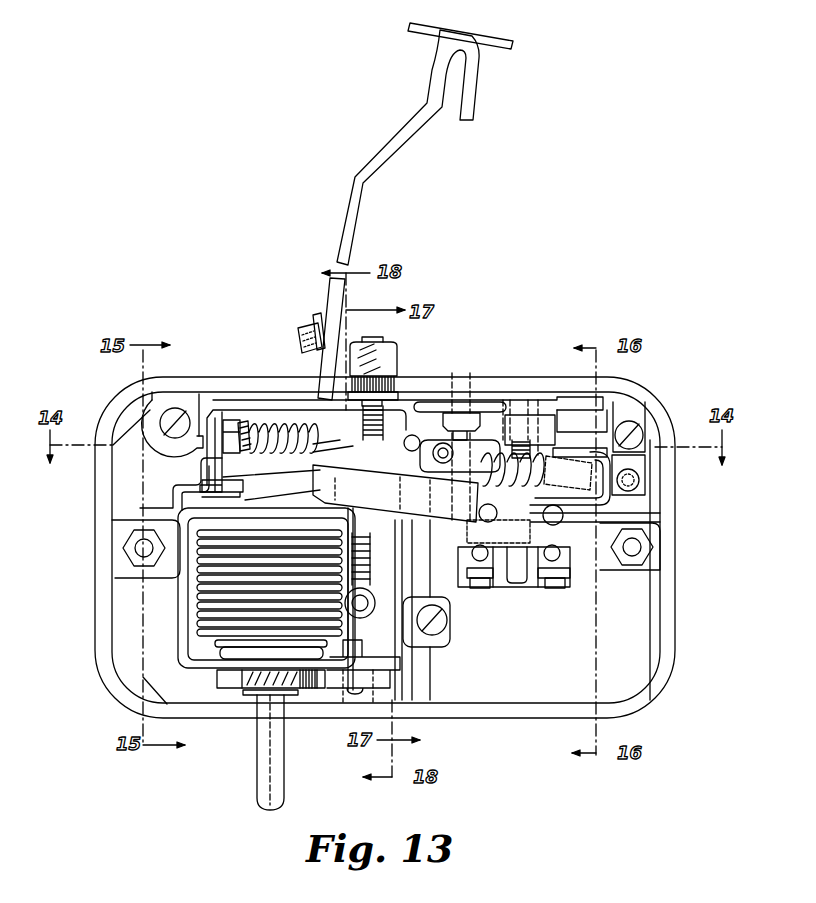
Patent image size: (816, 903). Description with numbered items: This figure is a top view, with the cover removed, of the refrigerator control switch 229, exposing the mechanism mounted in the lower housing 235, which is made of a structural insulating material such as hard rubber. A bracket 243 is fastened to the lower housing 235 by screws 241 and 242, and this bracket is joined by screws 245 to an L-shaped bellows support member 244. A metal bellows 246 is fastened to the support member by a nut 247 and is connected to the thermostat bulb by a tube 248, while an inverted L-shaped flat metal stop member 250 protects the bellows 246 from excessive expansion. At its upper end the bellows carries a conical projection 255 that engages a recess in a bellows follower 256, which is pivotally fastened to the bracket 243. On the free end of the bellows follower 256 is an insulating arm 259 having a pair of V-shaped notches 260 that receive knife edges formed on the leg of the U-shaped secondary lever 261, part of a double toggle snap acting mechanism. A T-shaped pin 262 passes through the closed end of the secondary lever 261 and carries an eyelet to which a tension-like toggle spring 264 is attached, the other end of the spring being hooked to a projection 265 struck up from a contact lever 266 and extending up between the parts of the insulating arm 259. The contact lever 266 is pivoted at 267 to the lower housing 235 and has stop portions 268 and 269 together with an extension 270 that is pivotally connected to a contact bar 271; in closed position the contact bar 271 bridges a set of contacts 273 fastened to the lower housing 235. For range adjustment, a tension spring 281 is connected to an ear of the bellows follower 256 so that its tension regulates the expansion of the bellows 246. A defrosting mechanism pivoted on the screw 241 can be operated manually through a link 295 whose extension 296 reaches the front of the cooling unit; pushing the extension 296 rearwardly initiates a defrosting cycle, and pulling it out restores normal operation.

The control switch 229 is at (736, 650).
The lower housing 235 is at (676, 604).
The screw 241 is at (173, 414).
The screw 242 is at (437, 361).
The bracket 243 is at (313, 410).
The L-shaped bellows support member 244 is at (178, 640).
The screws 245 is at (328, 728).
The metal bellows 246 is at (205, 600).
The nut 247 is at (262, 690).
The tube 248 is at (318, 788).
The bellows stop member 250 is at (177, 505).
The conical projection 255 is at (301, 354).
The bellows follower 256 is at (252, 486).
The insulating arm 259 is at (393, 487).
The V-shaped notches 260 is at (440, 491).
The secondary lever 261 is at (490, 478).
The T-shaped pin 262 is at (636, 426).
The toggle spring 264 is at (590, 400).
The projection 265 is at (452, 465).
The contact lever 266 is at (645, 500).
The pivot 267 is at (640, 478).
The stop portion 268 is at (580, 456).
The stop portion 269 is at (575, 508).
The extension 270 is at (458, 549).
The contact bar 271 is at (533, 572).
The contacts 273 is at (557, 570).
The tension spring 281 is at (385, 590).
The link 295 is at (300, 350).
The extension 296 is at (345, 232).